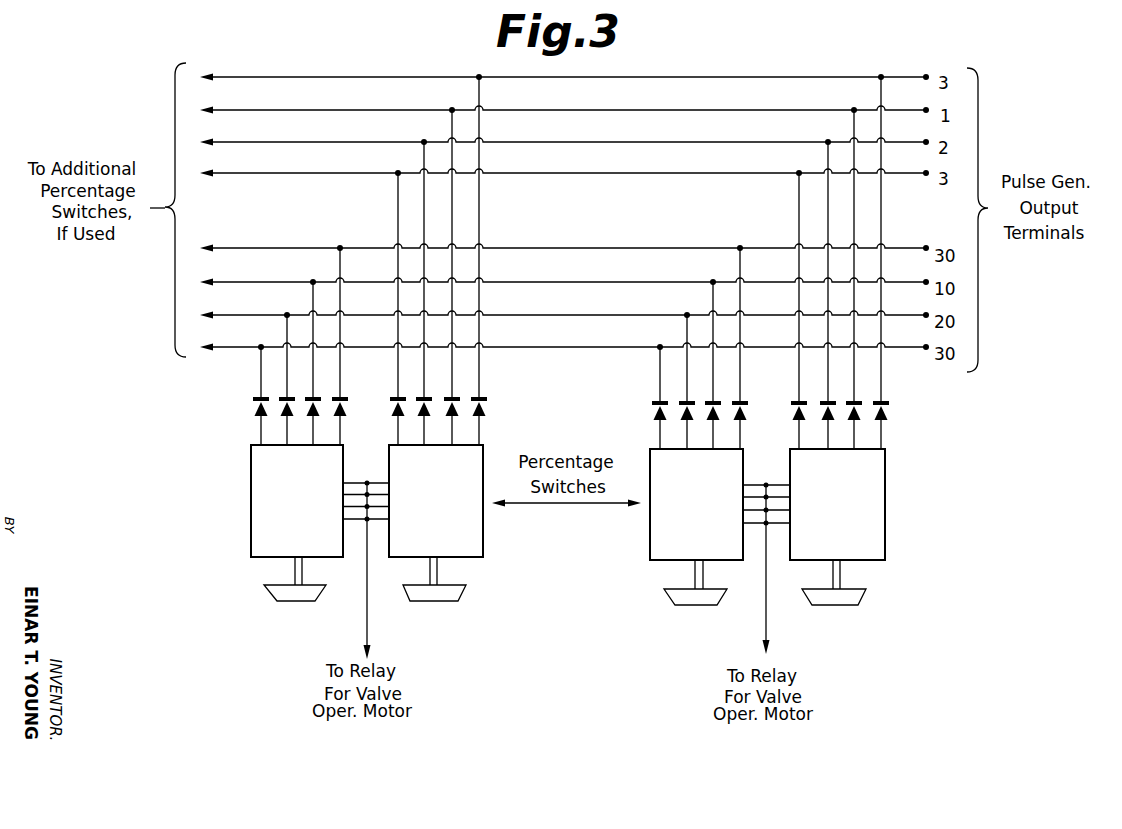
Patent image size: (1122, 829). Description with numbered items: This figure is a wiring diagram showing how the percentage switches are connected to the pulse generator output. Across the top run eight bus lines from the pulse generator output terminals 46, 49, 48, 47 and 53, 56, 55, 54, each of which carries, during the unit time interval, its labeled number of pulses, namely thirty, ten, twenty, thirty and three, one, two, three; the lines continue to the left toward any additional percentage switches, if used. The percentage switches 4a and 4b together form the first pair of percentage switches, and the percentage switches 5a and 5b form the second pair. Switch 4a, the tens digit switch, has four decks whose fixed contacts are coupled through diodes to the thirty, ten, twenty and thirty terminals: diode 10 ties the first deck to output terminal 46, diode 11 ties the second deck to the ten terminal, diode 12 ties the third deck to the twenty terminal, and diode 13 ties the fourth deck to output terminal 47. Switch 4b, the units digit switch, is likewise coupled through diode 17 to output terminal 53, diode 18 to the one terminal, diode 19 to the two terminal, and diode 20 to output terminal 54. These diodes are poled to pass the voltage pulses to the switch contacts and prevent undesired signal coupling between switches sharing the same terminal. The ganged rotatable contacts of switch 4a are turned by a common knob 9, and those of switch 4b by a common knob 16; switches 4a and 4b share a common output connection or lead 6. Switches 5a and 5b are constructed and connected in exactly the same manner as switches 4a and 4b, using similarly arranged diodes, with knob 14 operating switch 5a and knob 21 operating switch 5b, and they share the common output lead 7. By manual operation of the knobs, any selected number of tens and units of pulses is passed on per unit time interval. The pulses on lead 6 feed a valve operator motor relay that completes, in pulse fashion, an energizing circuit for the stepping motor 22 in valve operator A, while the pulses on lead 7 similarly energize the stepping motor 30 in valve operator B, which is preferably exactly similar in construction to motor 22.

The pulse generator output terminal 53 is at (928, 76).
The pulse generator output terminal 56 is at (925, 109).
The pulse generator output terminal 55 is at (925, 144).
The pulse generator output terminal 54 is at (925, 176).
The pulse generator output terminal 46 is at (924, 247).
The pulse generator output terminal 49 is at (924, 284).
The pulse generator output terminal 48 is at (923, 318).
The pulse generator output terminal 47 is at (923, 350).
The percentage switch 5a is at (265, 533).
The percentage switch 5b is at (458, 530).
The percentage switch 4a is at (670, 530).
The percentage switch 4b is at (855, 535).
The knob 14 is at (282, 595).
The knob 21 is at (448, 592).
The knob 9 is at (682, 595).
The knob 16 is at (847, 598).
The switch output lead 7 is at (363, 613).
The switch output lead 6 is at (765, 620).
The diode 12 is at (686, 399).
The diode 13 is at (654, 416).
The diode 10 is at (745, 412).
The diode 11 is at (716, 418).
The diode 20 is at (794, 401).
The diode 19 is at (831, 400).
The diode 18 is at (855, 419).
The diode 17 is at (888, 413).
The stepping motor 30 is at (346, 740).
The stepping motor 22 is at (750, 743).